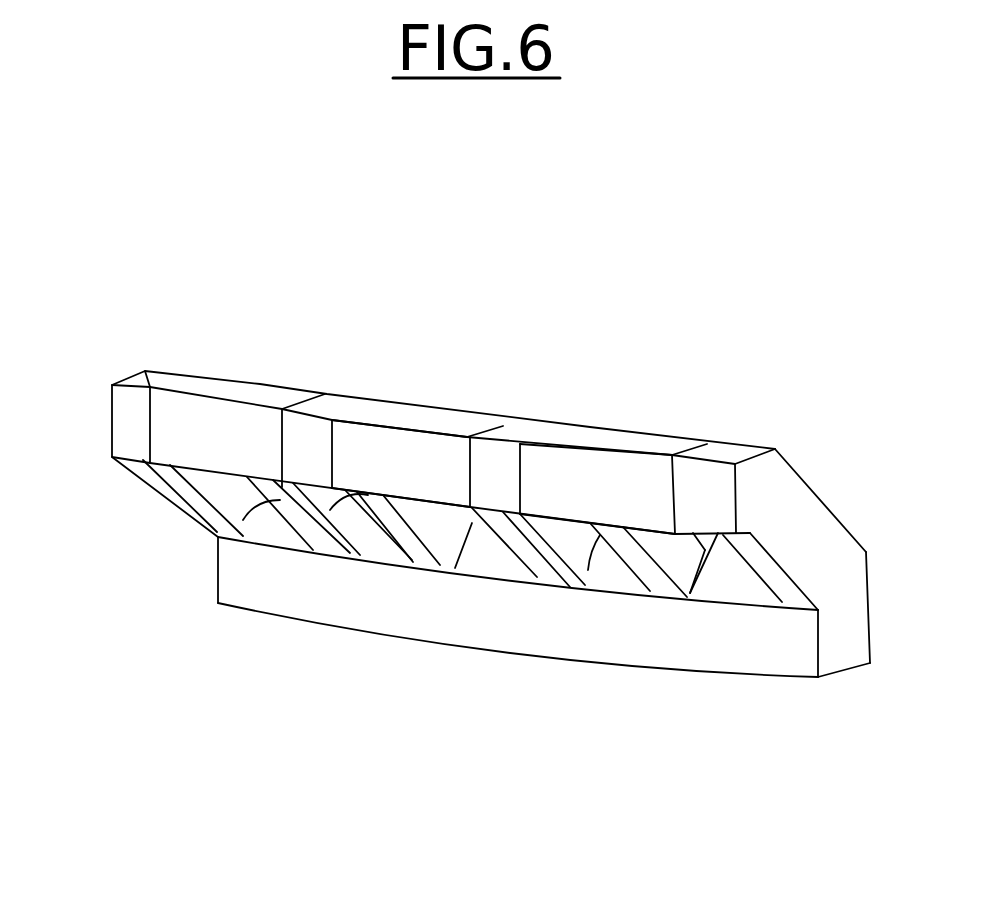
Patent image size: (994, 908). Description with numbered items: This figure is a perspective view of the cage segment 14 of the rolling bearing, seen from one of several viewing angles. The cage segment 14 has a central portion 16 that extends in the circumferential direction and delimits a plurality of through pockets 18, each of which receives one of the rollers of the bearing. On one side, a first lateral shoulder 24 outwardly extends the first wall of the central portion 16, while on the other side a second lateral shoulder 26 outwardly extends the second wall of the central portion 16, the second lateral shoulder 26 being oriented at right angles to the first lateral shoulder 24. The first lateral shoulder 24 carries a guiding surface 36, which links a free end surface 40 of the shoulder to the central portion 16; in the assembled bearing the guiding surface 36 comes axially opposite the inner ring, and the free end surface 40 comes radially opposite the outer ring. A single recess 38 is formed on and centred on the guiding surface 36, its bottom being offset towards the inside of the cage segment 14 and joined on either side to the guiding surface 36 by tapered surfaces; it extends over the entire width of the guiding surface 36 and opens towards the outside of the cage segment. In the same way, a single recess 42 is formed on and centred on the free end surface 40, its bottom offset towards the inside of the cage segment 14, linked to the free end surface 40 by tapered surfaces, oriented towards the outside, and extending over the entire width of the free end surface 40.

The cage segment 14 is at (121, 340).
The central portion 16 is at (820, 503).
The through pockets 18 is at (305, 530).
The first lateral shoulder 24 is at (258, 364).
The second lateral shoulder 26 is at (655, 668).
The guiding surface 36 is at (637, 438).
The recess 38 is at (432, 417).
The free end surface 40 is at (177, 425).
The recess 42 is at (420, 473).